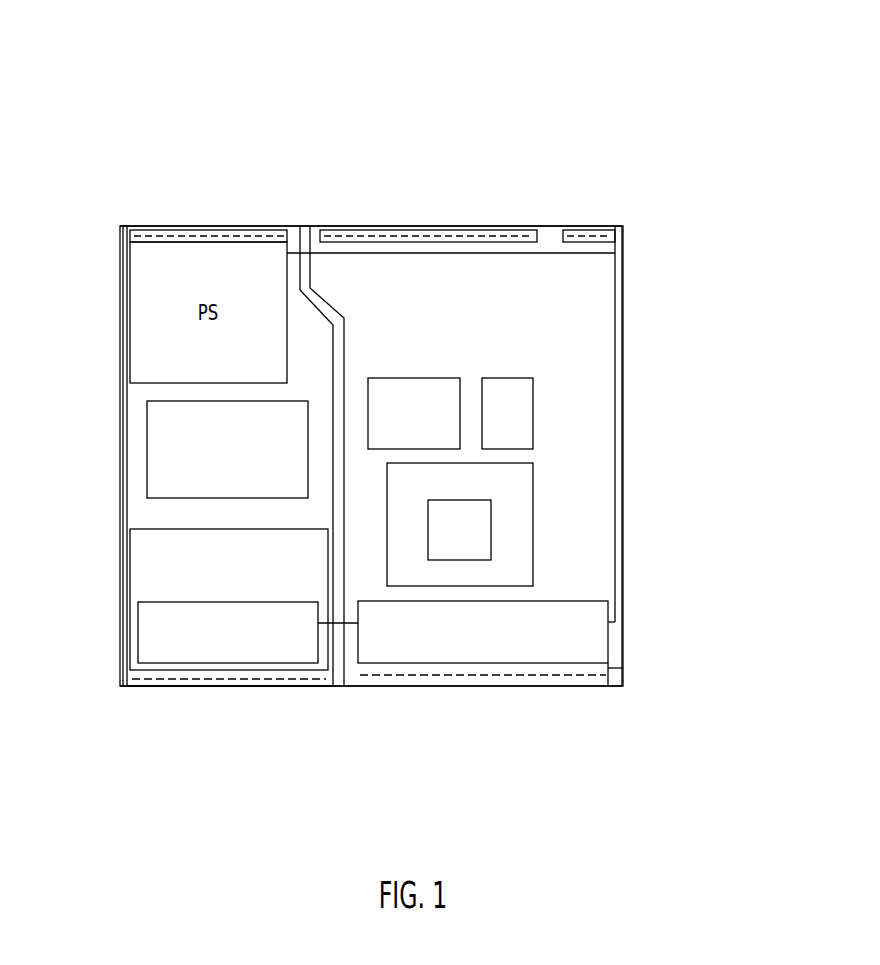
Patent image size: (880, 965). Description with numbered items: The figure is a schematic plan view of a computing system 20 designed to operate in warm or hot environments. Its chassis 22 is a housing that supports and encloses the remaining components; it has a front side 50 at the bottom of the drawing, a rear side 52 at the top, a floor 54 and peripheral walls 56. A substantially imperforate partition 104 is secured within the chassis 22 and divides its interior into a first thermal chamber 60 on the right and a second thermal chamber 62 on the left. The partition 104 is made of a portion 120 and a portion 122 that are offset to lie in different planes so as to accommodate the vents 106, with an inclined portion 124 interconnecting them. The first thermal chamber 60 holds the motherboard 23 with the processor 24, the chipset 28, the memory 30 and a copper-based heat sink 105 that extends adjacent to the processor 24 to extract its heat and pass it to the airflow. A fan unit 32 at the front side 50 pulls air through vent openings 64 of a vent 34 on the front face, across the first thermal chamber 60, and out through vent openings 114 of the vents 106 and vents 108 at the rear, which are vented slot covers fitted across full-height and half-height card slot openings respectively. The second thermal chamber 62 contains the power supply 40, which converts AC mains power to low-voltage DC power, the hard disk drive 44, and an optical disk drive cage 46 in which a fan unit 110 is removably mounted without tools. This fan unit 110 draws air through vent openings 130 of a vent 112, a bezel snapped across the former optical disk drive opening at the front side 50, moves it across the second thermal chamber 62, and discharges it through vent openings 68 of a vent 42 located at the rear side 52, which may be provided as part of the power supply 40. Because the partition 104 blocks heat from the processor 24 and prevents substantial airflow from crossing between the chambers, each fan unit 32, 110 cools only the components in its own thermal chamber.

The computing system 20 is at (650, 80).
The chassis 22 is at (623, 453).
The motherboard 23 is at (595, 477).
The processor 24 is at (491, 520).
The chipset 28 is at (452, 378).
The memory 30 is at (533, 410).
The fan unit 32 is at (608, 638).
The vent 34 is at (623, 668).
The power supply 40 is at (120, 360).
The vent 42 is at (146, 226).
The hard disk drive 44 is at (147, 458).
The optical disk drive cage 46 is at (130, 528).
The front side 50 is at (356, 752).
The rear side 52 is at (268, 95).
The floor 54 is at (622, 505).
The peripheral walls 56 is at (622, 520).
The first thermal chamber 60 is at (597, 290).
The second thermal chamber 62 is at (128, 408).
The vent openings 64 is at (467, 676).
The vent openings 68 is at (189, 226).
The partition 104 is at (305, 226).
The heat sink 105 is at (533, 557).
The vents 106 is at (456, 226).
The vents 108 is at (586, 226).
The fan unit 110 is at (138, 617).
The vent 112 is at (162, 687).
The vent openings 114 is at (374, 226).
The portion 120 is at (343, 372).
The portion 122 is at (310, 268).
The portion 124 is at (328, 306).
The vent openings 130 is at (238, 687).